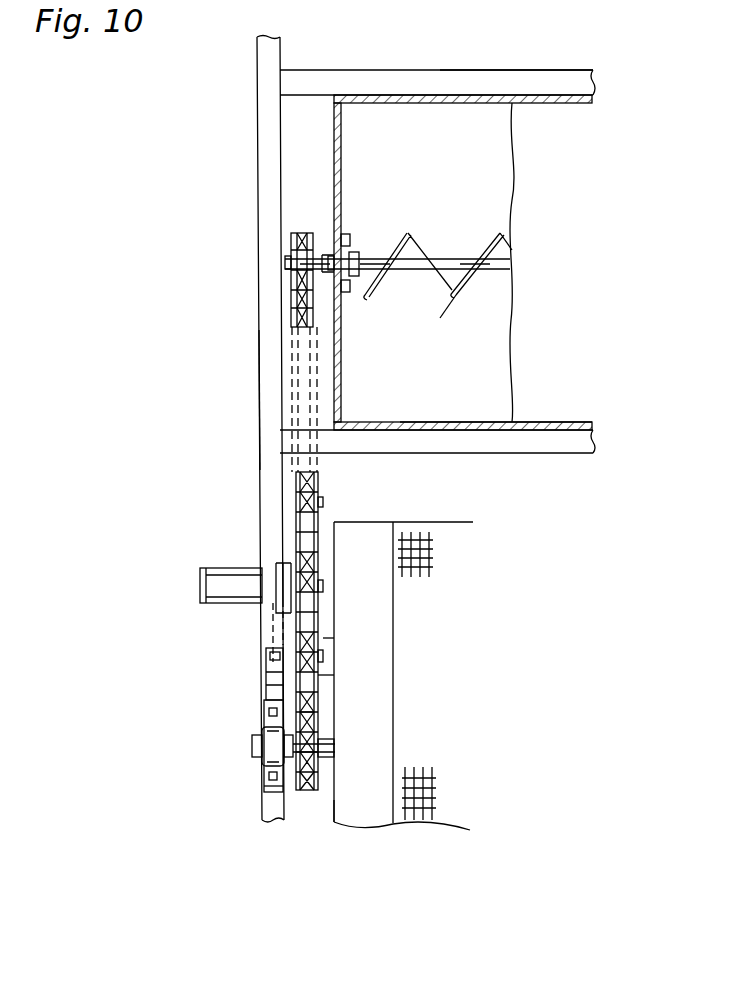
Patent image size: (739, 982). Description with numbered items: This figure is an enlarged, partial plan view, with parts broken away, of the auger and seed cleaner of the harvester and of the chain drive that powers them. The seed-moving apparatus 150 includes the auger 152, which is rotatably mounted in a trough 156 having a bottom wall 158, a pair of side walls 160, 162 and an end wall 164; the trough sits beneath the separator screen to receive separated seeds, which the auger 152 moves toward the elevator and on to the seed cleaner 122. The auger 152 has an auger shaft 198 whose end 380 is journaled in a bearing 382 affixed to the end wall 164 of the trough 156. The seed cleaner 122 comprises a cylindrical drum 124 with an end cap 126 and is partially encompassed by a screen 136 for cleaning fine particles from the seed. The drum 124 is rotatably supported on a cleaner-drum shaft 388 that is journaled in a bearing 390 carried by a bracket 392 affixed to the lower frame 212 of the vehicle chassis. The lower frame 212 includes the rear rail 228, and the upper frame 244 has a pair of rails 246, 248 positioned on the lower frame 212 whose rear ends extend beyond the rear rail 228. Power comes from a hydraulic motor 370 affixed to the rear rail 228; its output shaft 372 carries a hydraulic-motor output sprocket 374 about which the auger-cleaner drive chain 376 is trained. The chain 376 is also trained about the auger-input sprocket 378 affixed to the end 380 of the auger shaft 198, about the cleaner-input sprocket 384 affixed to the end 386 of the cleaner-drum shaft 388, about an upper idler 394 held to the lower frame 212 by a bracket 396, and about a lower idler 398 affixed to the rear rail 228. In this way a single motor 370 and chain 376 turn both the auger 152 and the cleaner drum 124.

The seed cleaner 122 is at (360, 836).
The cylindrical drum 124 is at (352, 526).
The end cap 126 is at (354, 813).
The screen 136 is at (435, 540).
The seed-moving apparatus 150 is at (443, 262).
The auger 152 is at (440, 314).
The trough 156 is at (450, 425).
The bottom wall 158 is at (512, 157).
The side wall 160 is at (444, 105).
The side wall 162 is at (352, 418).
The end wall 164 is at (342, 160).
The auger shaft 198 is at (448, 265).
The lower frame 212 is at (257, 342).
The rear rail 228 is at (260, 398).
The upper frame 244 is at (420, 50).
The rail 246 is at (556, 50).
The rail 248 is at (575, 438).
The hydraulic motor 370 is at (206, 576).
The output shaft 372 is at (333, 585).
The hydraulic-motor output sprocket 374 is at (349, 545).
The auger-cleaner drive chain 376 is at (320, 675).
The auger-input sprocket 378 is at (290, 250).
The end of auger shaft 380 is at (327, 258).
The bearing 382 is at (352, 245).
The cleaner-input sprocket 384 is at (305, 712).
The end of cleaner-drum shaft 386 is at (253, 746).
The cleaner-drum shaft 388 is at (335, 747).
The bearing 390 is at (270, 776).
The bracket 392 is at (265, 698).
The upper idler 394 is at (325, 642).
The bracket 396 is at (283, 672).
The lower idler 398 is at (300, 483).